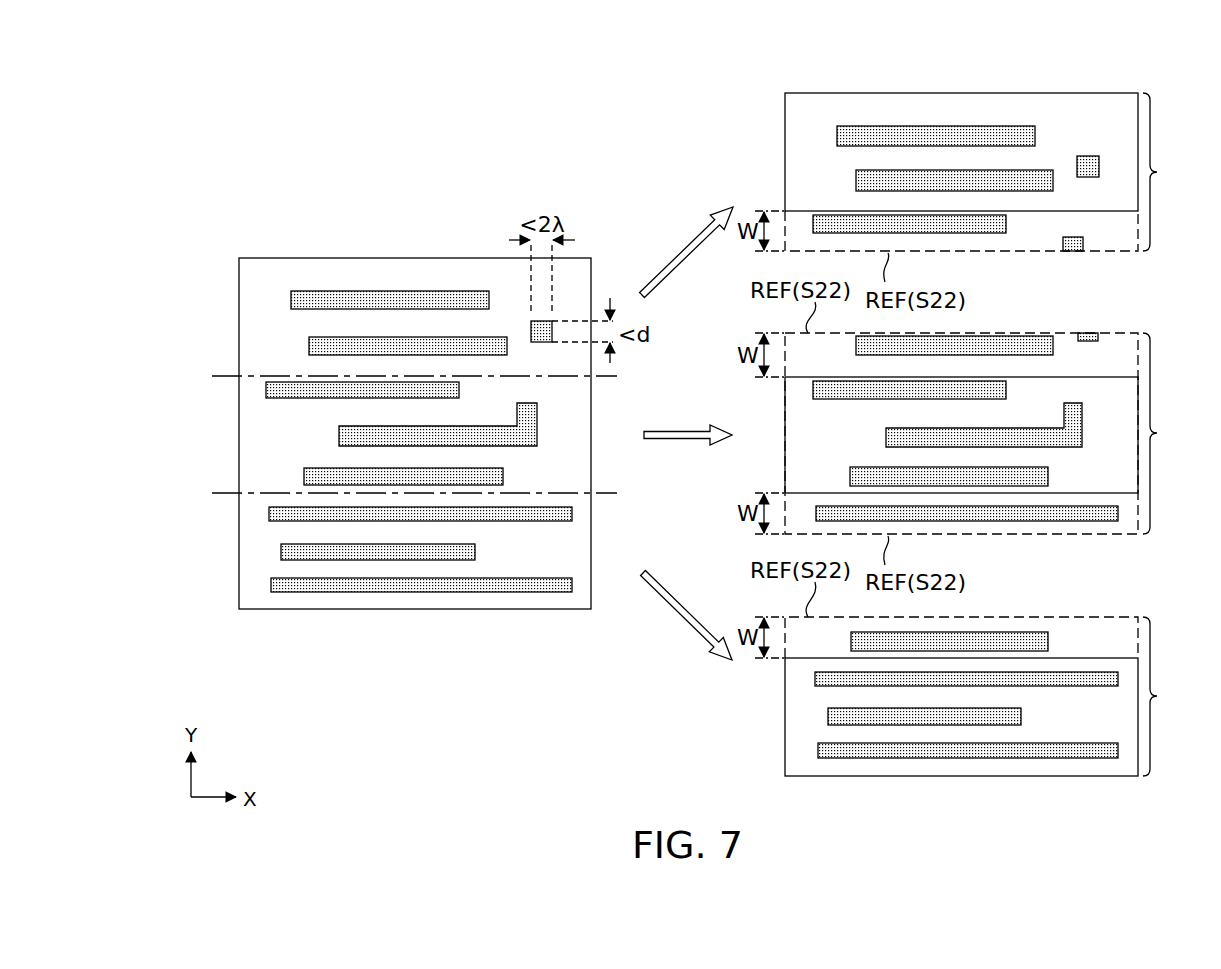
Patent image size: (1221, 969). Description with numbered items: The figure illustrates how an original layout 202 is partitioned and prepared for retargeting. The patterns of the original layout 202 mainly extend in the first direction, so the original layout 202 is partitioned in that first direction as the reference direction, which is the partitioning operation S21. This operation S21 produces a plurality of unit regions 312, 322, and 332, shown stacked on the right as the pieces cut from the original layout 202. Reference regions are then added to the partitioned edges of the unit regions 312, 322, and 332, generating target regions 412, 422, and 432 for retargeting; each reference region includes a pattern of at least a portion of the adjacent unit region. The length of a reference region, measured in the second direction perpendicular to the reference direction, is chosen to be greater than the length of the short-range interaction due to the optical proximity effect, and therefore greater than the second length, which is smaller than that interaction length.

The original layout 202 is at (415, 258).
The unit region 312 is at (1111, 93).
The unit region 322 is at (1112, 377).
The unit region 332 is at (1112, 658).
The target region 412 is at (1175, 172).
The target region 422 is at (1175, 433).
The target region 432 is at (1175, 696).
The partitioning operation S21 is at (680, 250).